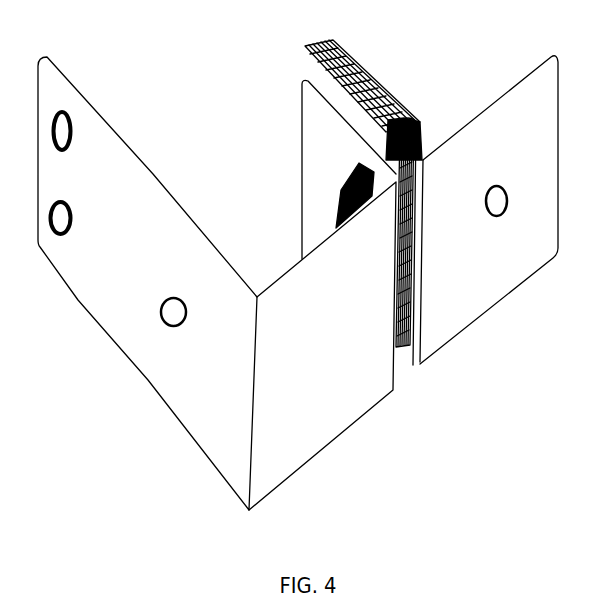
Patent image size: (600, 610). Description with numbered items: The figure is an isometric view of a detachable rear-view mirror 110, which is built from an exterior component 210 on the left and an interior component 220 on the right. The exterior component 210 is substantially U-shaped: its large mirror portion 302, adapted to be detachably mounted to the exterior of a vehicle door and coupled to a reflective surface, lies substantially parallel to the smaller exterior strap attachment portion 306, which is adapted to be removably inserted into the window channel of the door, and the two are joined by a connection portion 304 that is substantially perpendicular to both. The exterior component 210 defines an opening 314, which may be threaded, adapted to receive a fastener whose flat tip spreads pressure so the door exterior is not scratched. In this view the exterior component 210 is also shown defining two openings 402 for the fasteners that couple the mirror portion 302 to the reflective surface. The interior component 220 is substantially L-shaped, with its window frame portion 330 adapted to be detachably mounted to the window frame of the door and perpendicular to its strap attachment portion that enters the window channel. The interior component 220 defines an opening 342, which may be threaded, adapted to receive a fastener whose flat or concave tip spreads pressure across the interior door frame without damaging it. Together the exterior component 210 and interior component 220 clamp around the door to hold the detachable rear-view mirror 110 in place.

The detachable rear-view mirror 110 is at (310, 277).
The exterior component 210 is at (229, 290).
The interior component 220 is at (501, 222).
The mirror portion 302 is at (130, 364).
The connection portion 304 is at (307, 448).
The exterior strap attachment portion 306 is at (300, 147).
The opening 314 is at (172, 296).
The window frame portion 330 is at (445, 345).
The opening 342 is at (500, 186).
The openings 402 is at (72, 144).